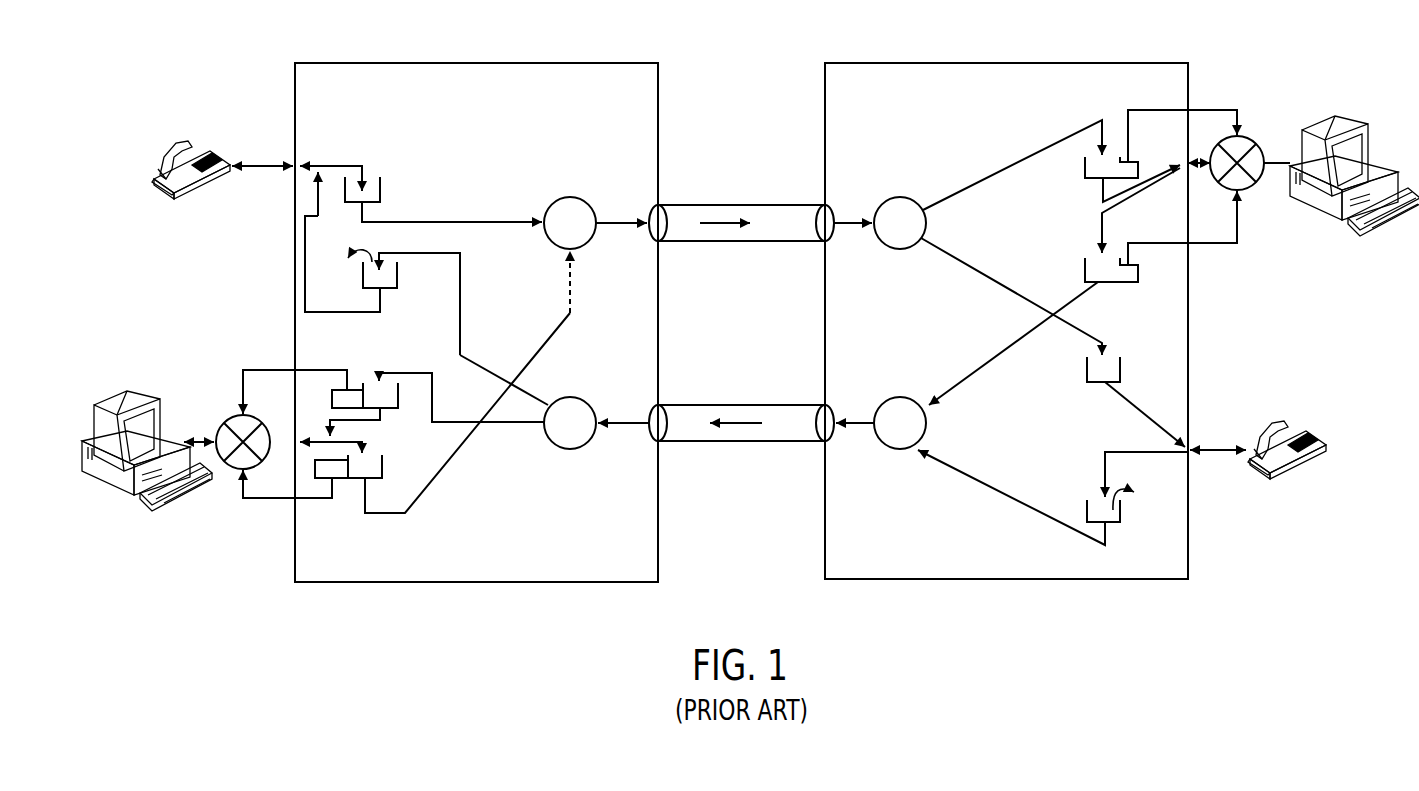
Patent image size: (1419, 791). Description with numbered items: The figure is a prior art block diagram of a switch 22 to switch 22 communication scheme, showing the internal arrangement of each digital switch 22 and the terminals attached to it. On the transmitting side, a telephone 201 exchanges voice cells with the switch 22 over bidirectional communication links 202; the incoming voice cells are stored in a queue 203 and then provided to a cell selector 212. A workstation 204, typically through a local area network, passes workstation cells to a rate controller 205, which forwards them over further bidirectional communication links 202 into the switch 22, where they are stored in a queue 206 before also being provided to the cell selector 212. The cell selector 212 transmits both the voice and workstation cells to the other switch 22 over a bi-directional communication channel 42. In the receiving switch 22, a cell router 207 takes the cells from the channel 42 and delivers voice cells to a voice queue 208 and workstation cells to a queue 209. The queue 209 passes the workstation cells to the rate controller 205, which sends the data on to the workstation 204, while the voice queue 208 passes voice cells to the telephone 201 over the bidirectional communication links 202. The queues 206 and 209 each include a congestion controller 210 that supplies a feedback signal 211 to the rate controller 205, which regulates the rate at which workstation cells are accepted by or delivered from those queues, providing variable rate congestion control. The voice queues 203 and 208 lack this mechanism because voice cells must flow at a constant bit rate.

The switch 22 is at (568, 63).
The bi-directional communication channel 42 is at (717, 204).
The telephone 201 is at (160, 198).
The bidirectional communication links 202 is at (255, 170).
The queue 203 is at (345, 185).
The workstation 204 is at (112, 490).
The rate controller 205 is at (232, 470).
The queue 206 is at (390, 472).
The cell router 207 is at (575, 396).
The voice queue 208 is at (405, 278).
The queue 209 is at (400, 395).
The congestion controller 210 is at (352, 388).
The feedback signal 211 is at (283, 366).
The cell selector 212 is at (572, 196).